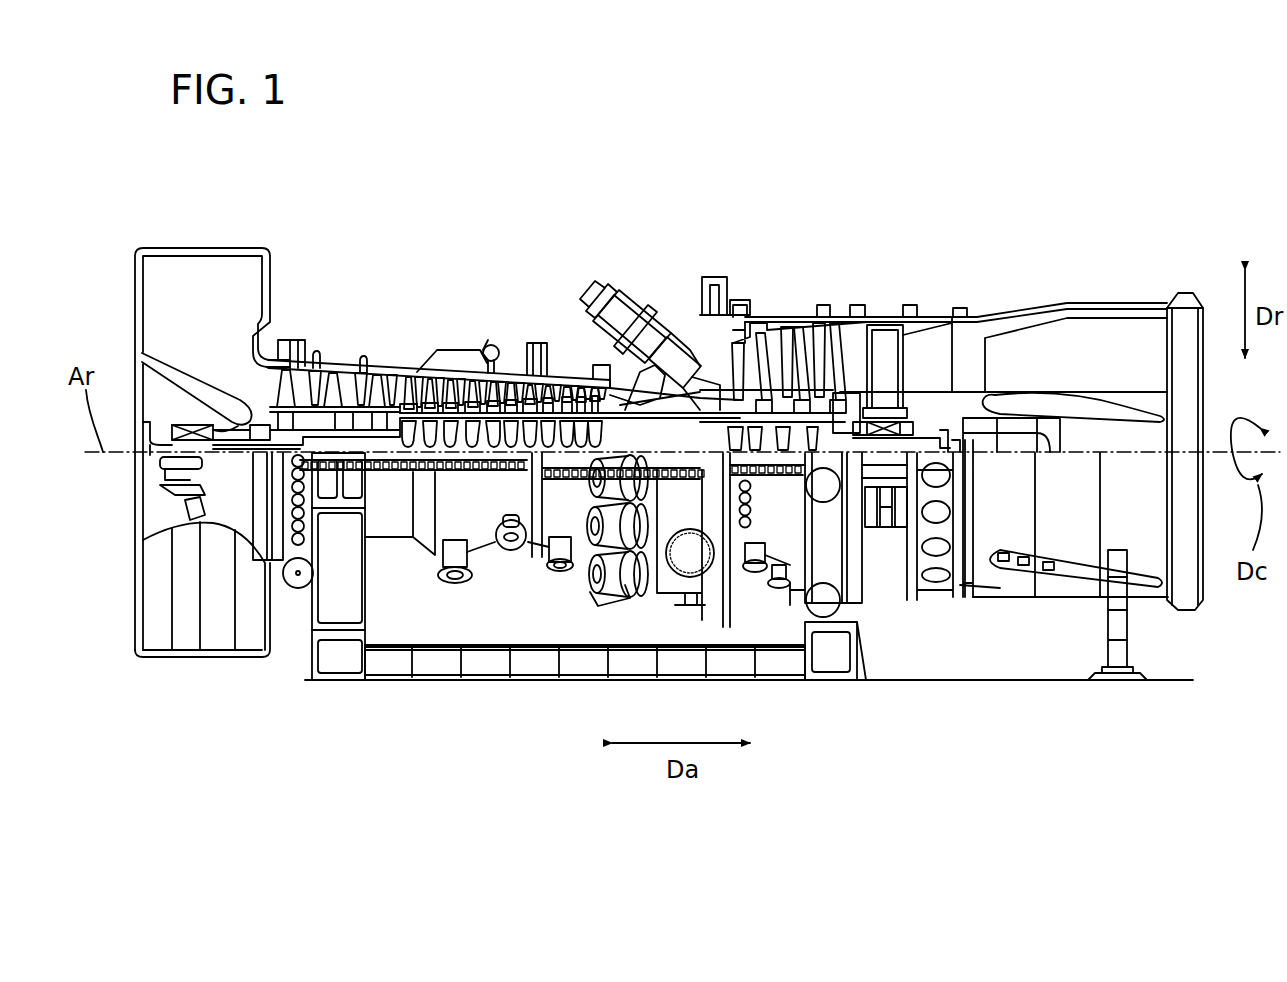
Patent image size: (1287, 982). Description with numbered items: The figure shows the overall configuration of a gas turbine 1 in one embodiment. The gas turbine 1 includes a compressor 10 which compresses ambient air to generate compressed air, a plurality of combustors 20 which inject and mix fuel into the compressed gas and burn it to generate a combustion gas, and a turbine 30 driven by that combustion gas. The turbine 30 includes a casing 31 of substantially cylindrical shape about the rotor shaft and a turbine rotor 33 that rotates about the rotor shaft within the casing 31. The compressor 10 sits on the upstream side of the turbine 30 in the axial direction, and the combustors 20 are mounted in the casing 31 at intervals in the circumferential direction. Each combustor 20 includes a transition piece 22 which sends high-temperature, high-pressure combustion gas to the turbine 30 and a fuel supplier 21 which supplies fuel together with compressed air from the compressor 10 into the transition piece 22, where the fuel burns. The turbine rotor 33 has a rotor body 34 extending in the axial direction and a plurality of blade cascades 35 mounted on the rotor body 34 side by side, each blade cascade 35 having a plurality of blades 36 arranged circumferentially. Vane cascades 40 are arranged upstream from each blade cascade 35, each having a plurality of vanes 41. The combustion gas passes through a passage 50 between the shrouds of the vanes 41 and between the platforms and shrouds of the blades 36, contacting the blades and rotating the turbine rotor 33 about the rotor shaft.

The gas turbine 1 is at (1040, 142).
The compressor 10 is at (390, 366).
The combustor 20 is at (590, 287).
The fuel supplier 21 is at (593, 300).
The transition piece 22 is at (668, 386).
The turbine 30 is at (838, 300).
The casing 31 is at (797, 330).
The turbine rotor 33 is at (866, 158).
The rotor body 34 is at (790, 380).
The blade cascade 35 is at (768, 434).
The blade 36 is at (787, 386).
The vane cascade 40 is at (725, 374).
The vane 41 is at (725, 296).
The passage 50 is at (785, 373).